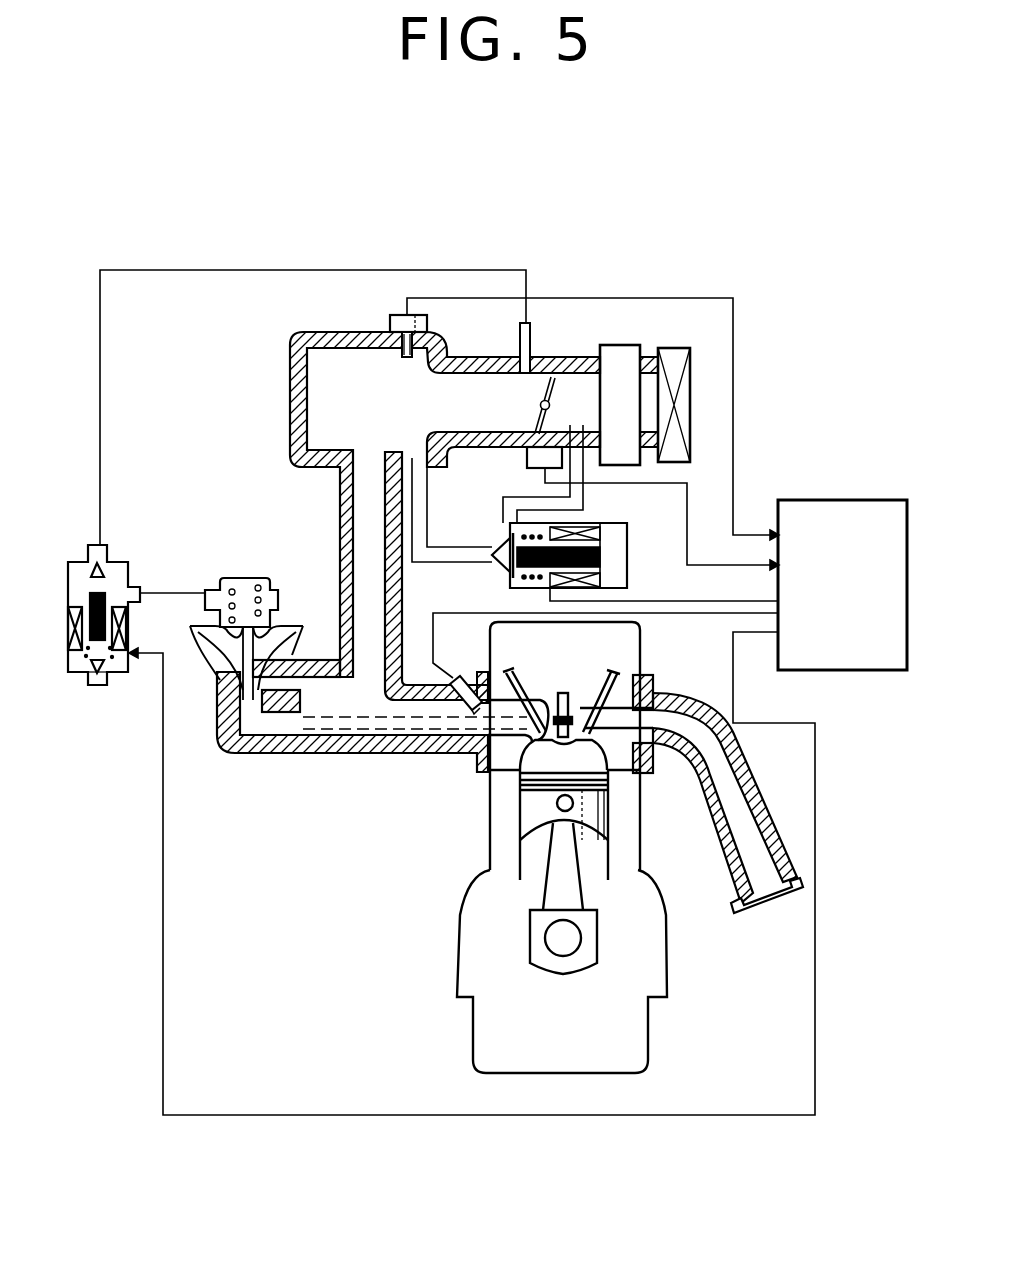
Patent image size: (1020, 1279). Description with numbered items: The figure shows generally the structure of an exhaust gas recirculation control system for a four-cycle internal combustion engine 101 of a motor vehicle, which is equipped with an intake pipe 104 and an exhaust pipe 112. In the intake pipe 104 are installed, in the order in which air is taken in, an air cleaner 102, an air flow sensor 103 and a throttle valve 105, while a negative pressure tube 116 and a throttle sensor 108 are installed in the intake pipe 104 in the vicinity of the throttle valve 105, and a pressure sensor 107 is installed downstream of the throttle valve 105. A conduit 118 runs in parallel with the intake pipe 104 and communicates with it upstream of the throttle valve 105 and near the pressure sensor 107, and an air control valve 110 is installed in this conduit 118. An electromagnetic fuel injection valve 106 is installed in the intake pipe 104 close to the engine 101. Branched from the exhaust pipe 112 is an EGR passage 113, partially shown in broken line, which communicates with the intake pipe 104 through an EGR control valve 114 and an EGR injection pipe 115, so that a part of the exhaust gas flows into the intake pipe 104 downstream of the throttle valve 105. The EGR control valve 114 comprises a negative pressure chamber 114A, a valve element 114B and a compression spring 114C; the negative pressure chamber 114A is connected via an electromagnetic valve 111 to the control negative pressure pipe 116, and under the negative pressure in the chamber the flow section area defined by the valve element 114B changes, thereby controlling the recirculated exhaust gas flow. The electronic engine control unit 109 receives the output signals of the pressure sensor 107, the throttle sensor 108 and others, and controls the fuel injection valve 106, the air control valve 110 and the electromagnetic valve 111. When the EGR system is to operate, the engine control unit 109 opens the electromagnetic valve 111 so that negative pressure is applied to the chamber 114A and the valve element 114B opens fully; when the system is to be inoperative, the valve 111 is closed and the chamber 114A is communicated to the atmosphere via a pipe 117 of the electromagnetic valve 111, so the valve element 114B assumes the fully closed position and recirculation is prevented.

The internal combustion engine 101 is at (490, 823).
The air cleaner 102 is at (673, 348).
The air flow sensor 103 is at (613, 345).
The intake pipe 104 is at (290, 400).
The throttle valve 105 is at (538, 413).
The electromagnetic fuel injection valve 106 is at (453, 678).
The pressure sensor 107 is at (390, 322).
The throttle sensor 108 is at (527, 458).
The engine control unit 109 is at (818, 500).
The air control valve 110 is at (490, 520).
The electromagnetic valve 111 is at (70, 563).
The exhaust pipe 112 is at (693, 800).
The EGR passage 113 is at (313, 738).
The EGR control valve 114 is at (213, 616).
The negative pressure chamber 114A is at (243, 590).
The valve element 114B is at (203, 643).
The compression spring 114C is at (262, 598).
The EGR injection pipe 115 is at (266, 694).
The negative pressure tube 116 is at (520, 342).
The pipe 117 is at (90, 688).
The conduit 118 is at (433, 562).